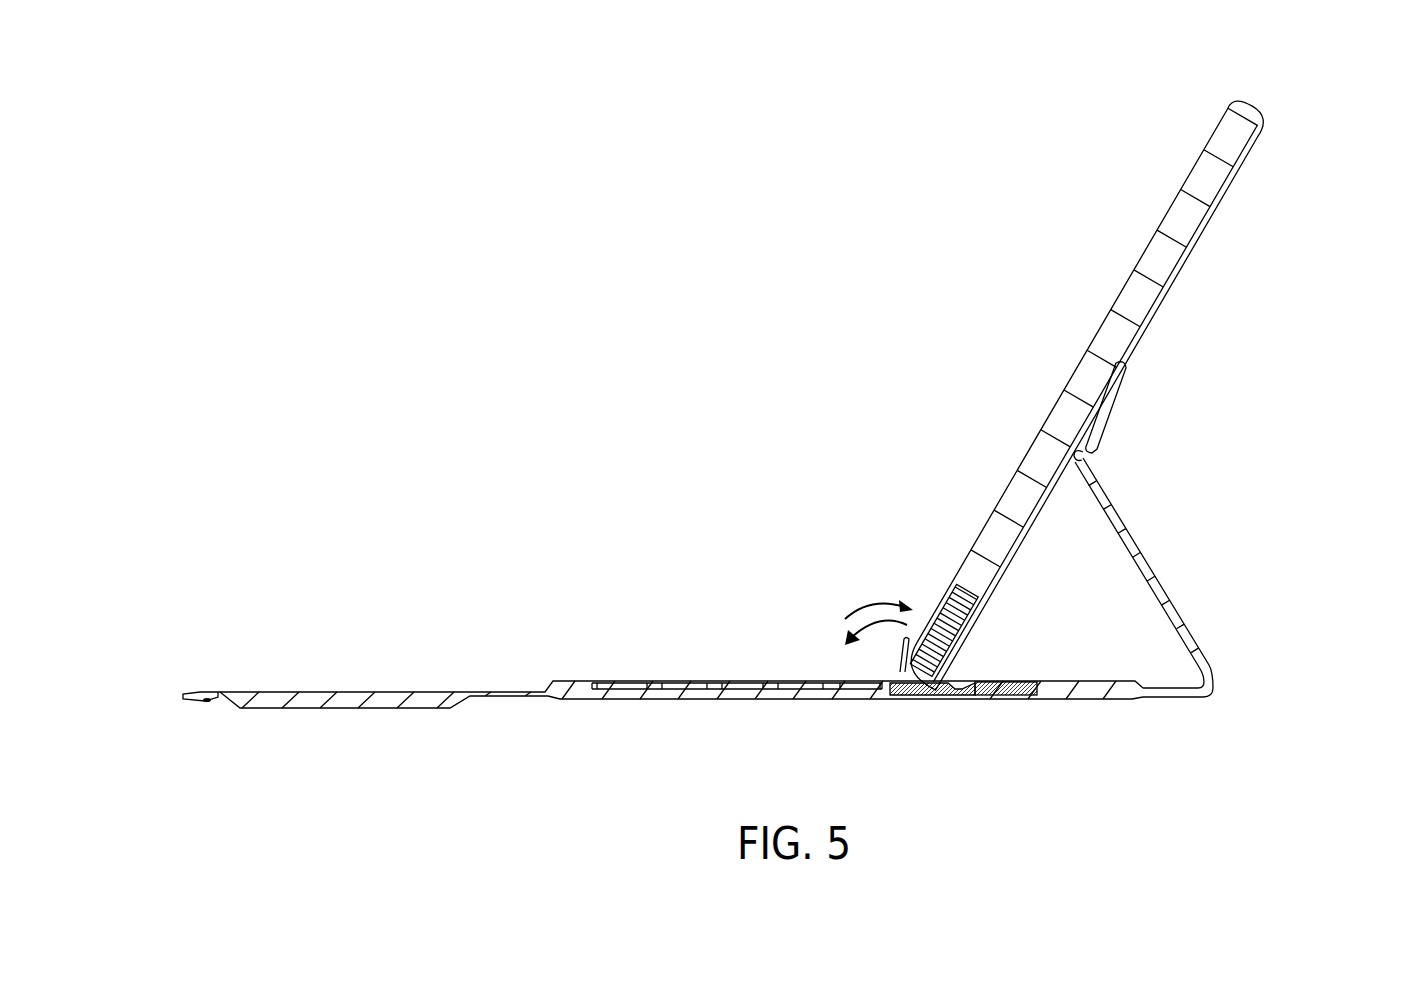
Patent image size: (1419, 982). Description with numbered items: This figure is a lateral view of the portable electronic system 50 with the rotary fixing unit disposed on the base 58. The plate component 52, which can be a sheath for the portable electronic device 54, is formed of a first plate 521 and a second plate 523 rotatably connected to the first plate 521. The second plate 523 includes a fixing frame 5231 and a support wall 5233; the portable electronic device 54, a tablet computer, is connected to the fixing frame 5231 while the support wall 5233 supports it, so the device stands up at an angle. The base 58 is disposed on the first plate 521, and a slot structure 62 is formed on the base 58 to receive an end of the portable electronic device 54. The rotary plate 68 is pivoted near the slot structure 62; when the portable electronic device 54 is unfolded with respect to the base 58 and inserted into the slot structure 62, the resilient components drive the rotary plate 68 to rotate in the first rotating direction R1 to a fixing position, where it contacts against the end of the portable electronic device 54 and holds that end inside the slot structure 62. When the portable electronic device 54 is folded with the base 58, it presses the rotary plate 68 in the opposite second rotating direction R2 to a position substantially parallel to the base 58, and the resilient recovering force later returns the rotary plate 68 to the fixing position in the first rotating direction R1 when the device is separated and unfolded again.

The portable electronic system 50 is at (778, 222).
The plate component 52 is at (1337, 462).
The first plate 521 is at (1117, 693).
The second plate 523 is at (1282, 443).
The fixing frame 5231 is at (1166, 297).
The support wall 5233 is at (1157, 588).
The portable electronic device 54 is at (1246, 106).
The base 58 is at (1017, 693).
The slot structure 62 is at (930, 688).
The rotary plate 68 is at (903, 670).
The first rotating direction R1 is at (859, 646).
The second rotating direction R2 is at (879, 595).